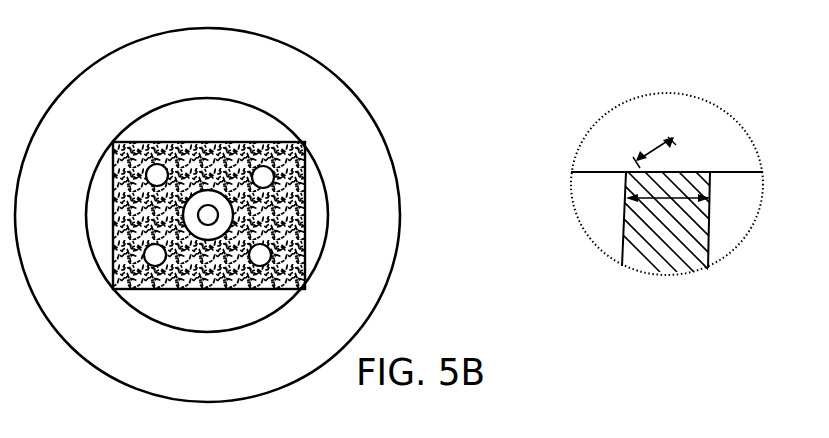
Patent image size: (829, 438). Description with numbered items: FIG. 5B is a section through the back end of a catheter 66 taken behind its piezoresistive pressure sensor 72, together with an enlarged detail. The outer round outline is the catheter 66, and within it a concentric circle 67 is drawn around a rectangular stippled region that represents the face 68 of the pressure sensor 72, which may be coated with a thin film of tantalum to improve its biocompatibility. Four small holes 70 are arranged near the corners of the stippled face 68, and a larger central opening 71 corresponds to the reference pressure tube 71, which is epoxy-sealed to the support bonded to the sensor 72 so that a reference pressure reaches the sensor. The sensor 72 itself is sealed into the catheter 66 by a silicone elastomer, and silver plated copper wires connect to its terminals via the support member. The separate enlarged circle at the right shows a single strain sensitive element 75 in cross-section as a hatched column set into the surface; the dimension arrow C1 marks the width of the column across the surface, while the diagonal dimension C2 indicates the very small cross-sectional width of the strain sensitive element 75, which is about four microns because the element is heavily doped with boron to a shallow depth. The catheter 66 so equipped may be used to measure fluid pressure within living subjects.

The catheter 66 is at (107, 54).
The inner circular region of pad 67 is at (333, 90).
The face of the pressure sensor 68 is at (202, 142).
The piezoresistive pressure sensor 72 is at (245, 141).
The holes 70 is at (157, 175).
The reference pressure tube 71 is at (208, 240).
The strain sensitive element 75 is at (688, 172).
The channel width dimension C1 is at (668, 210).
The cross-sectional width C2 is at (648, 148).